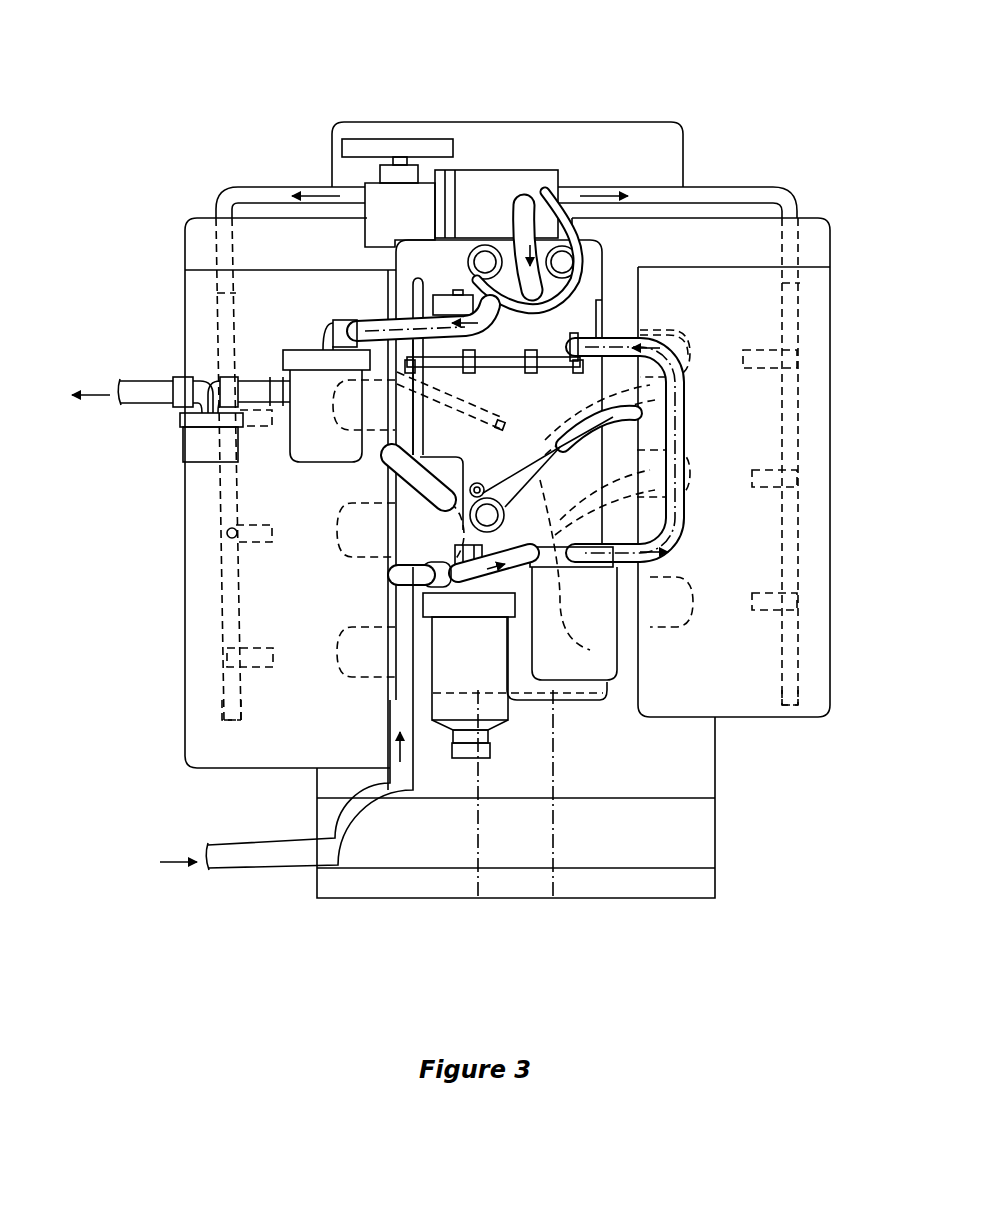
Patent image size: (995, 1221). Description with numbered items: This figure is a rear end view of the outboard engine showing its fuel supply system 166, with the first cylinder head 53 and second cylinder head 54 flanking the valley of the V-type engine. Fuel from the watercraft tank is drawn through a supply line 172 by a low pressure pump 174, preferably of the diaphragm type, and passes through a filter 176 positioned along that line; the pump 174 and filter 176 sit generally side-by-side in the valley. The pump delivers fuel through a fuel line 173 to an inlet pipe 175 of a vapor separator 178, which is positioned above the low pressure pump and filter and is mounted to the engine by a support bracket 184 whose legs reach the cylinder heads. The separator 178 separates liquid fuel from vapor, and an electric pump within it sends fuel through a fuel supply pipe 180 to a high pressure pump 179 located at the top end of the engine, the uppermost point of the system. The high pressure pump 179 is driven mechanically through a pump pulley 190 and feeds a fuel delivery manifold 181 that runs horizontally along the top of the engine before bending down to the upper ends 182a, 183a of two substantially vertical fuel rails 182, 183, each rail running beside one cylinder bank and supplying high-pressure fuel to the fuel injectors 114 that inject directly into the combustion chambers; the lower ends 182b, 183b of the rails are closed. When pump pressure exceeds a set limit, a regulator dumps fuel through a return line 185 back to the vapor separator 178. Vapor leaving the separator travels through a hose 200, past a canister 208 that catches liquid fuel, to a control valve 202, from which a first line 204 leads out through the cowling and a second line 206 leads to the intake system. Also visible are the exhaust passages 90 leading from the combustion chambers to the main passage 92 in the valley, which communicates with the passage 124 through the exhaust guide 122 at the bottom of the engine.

The first cylinder head 53 is at (750, 702).
The second cylinder head 54 is at (255, 757).
The exhaust passage 90 is at (336, 555).
The main passage 92 is at (553, 793).
The fuel injectors 114 is at (252, 435).
The exhaust guide 122 is at (717, 848).
The passage 124 is at (478, 843).
The fuel supply system 166 is at (714, 346).
The supply line 172 is at (275, 867).
The fuel line 173 is at (683, 437).
The low pressure pump 174 is at (637, 605).
The inlet pipe 175 is at (600, 330).
The filter 176 is at (508, 677).
The vapor separator 178 is at (590, 306).
The high pressure pump 179 is at (513, 166).
The fuel supply pipe 180 is at (547, 192).
The fuel delivery manifold 181 is at (268, 187).
The fuel rail 182 is at (802, 693).
The upper end of fuel rail 182a is at (805, 283).
The lower end of fuel rail 182b is at (793, 707).
The fuel rail 183 is at (225, 590).
The upper end of fuel rail 183a is at (225, 293).
The lower end of fuel rail 183b is at (225, 707).
The support bracket 184 is at (393, 267).
The return line 185 is at (573, 293).
The pump pulley 190 is at (397, 139).
The hose 200 is at (505, 425).
The control valve 202 is at (240, 475).
The first line 204 is at (127, 380).
The second line 206 is at (220, 387).
The canister 208 is at (292, 440).